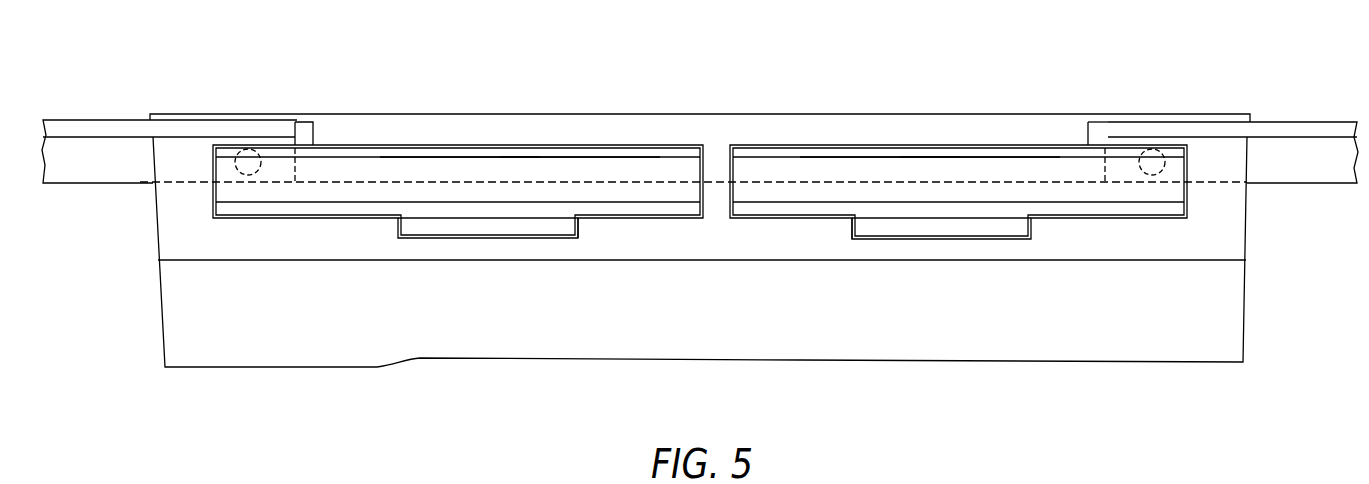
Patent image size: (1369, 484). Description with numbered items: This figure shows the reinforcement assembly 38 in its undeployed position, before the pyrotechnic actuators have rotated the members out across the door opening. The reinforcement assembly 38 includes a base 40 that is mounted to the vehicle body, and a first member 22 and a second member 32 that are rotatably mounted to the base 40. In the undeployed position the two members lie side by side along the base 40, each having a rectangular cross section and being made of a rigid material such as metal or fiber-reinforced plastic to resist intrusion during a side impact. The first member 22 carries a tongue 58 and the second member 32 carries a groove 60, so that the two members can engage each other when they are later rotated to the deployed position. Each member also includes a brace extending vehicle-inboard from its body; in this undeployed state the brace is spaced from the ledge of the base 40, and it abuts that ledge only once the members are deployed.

The first member 22 is at (887, 165).
The second member 32 is at (577, 165).
The reinforcement assembly 38 is at (773, 77).
The base 40 is at (247, 370).
The tongue 58 is at (970, 163).
The groove 60 is at (458, 165).